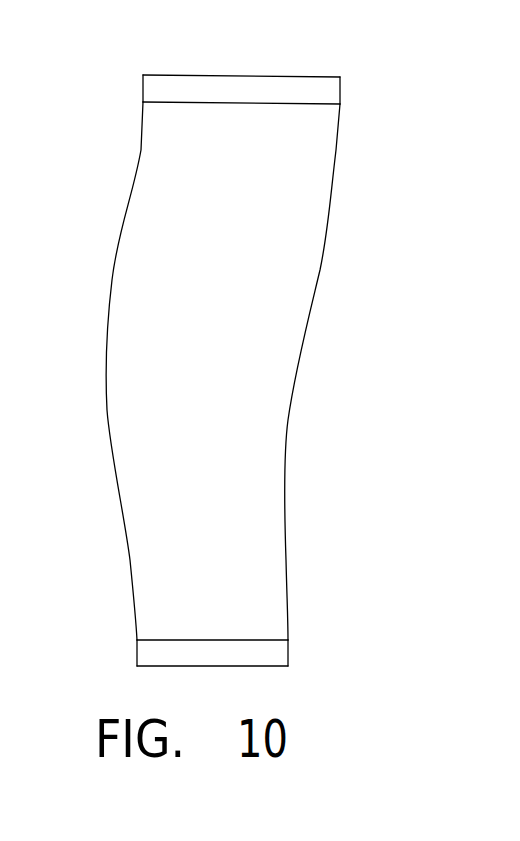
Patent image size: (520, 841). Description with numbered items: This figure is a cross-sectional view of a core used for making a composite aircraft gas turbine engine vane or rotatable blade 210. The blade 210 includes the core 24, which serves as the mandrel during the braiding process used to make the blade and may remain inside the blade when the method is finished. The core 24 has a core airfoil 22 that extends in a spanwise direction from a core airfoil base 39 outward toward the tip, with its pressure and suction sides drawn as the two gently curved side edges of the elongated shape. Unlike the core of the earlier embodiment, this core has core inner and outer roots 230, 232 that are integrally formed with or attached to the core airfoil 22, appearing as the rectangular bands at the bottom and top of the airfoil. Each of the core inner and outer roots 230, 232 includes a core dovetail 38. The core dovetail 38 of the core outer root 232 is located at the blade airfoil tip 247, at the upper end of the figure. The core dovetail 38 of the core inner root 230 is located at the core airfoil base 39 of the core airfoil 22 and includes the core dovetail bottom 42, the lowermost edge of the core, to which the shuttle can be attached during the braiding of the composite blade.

The composite aircraft gas turbine engine vane or rotatable blade 210 is at (262, 368).
The core airfoil 22 is at (291, 398).
The core 24 is at (133, 593).
The core dovetail 38 is at (272, 75).
The core airfoil base 39 is at (211, 641).
The core dovetail bottom 42 is at (155, 668).
The core inner root 230 is at (289, 652).
The core outer root 232 is at (341, 91).
The blade airfoil tip 247 is at (147, 108).